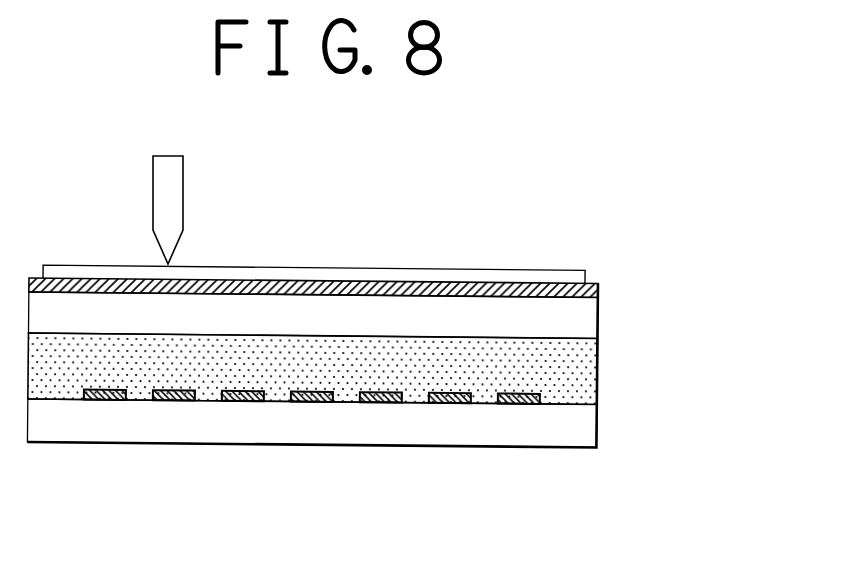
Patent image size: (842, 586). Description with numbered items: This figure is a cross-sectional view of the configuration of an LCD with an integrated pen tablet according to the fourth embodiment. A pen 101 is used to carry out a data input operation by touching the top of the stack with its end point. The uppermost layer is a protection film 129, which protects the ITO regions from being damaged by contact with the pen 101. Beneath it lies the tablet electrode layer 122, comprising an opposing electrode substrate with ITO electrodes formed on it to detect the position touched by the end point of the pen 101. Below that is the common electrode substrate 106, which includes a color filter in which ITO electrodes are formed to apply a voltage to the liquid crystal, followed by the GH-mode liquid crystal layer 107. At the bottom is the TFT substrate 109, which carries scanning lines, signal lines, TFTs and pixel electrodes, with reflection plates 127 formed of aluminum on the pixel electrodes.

The pen 101 is at (183, 200).
The protection film 129 is at (480, 268).
The tablet electrode layer 122 is at (599, 288).
The common electrode substrate 106 is at (592, 323).
The GH-mode liquid crystal layer 107 is at (588, 378).
The TFT substrate 109 is at (592, 430).
The reflection plates 127 is at (303, 403).